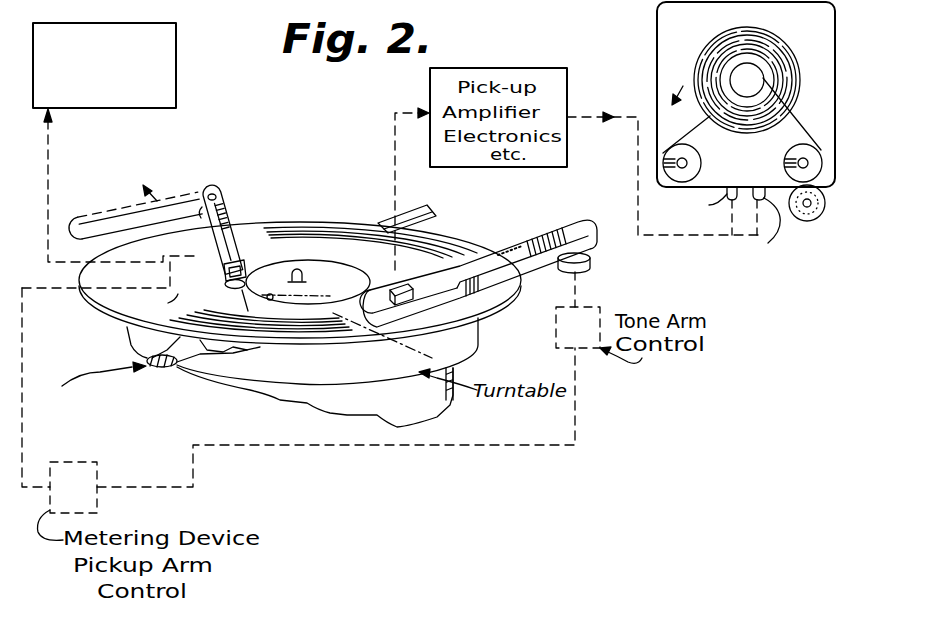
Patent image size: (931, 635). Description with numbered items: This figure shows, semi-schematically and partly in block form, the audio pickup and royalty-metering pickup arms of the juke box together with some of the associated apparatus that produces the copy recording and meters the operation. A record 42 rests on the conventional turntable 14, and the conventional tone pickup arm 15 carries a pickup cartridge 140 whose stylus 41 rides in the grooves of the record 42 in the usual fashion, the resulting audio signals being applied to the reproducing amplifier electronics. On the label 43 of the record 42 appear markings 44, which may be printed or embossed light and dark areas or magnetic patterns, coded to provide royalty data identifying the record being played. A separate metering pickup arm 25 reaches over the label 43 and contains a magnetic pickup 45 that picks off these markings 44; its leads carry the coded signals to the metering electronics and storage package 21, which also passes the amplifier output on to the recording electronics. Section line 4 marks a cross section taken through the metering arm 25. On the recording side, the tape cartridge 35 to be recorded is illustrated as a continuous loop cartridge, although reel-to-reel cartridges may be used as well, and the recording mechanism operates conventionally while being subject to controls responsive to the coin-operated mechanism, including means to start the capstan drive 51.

The metering electronics package 21 is at (176, 80).
The metering pickup arm 25 is at (267, 180).
The section line 4- 4 is at (226, 242).
The turntable 14 is at (363, 245).
The label 43 is at (302, 283).
The stylus 41 is at (349, 337).
The record 42 is at (284, 347).
The markings 44 is at (252, 293).
The magnetic pickup 45 is at (159, 308).
The tone pickup arm 15 is at (520, 241).
The pickup cartridge 140 is at (409, 286).
The tape cartridge 35 is at (657, 40).
The capstan drive 51 is at (821, 212).